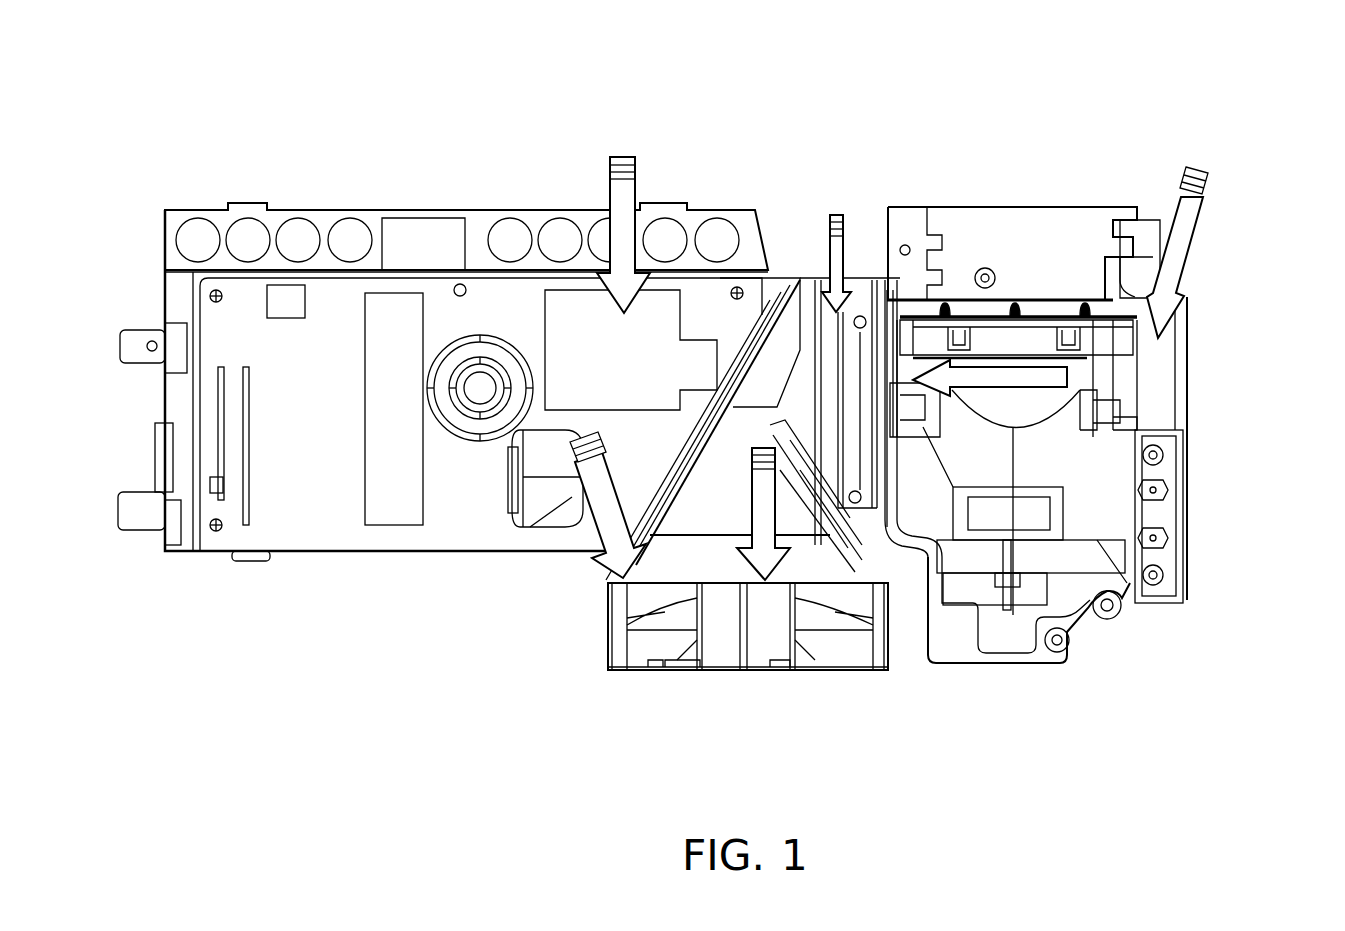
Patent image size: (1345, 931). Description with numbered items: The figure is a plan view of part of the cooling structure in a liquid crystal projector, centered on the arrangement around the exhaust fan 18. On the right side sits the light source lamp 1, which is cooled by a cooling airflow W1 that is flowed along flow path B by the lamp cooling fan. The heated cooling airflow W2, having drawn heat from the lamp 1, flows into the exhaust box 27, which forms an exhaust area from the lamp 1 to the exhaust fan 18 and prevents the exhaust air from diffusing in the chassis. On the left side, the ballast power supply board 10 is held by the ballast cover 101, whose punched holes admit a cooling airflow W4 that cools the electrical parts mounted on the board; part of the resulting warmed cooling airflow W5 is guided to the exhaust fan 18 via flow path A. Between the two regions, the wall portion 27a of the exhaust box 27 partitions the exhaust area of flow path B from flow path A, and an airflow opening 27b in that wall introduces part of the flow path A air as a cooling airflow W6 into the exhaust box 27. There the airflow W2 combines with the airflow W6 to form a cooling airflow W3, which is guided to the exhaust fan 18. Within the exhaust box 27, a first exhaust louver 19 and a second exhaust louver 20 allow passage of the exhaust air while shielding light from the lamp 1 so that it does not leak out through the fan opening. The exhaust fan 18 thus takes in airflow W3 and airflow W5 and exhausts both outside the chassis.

The ballast cover 101 is at (358, 240).
The ballast power supply board 10 is at (390, 418).
The flow path A is at (582, 330).
The cooling airflow W4 is at (590, 205).
The exhaust box 27 is at (781, 337).
The wall portion 27a is at (818, 278).
The airflow opening 27b is at (857, 278).
The cooling airflow W6 is at (833, 224).
The cooling airflow W5 is at (578, 474).
The cooling airflow W3 is at (737, 573).
The exhaust fan 18 is at (627, 648).
The first exhaust louver 19 is at (822, 525).
The second exhaust louver 20 is at (905, 650).
The light source lamp 1 is at (1037, 455).
The cooling airflow W2 is at (1040, 387).
The flow path B is at (1037, 410).
The cooling airflow W1 is at (1197, 231).